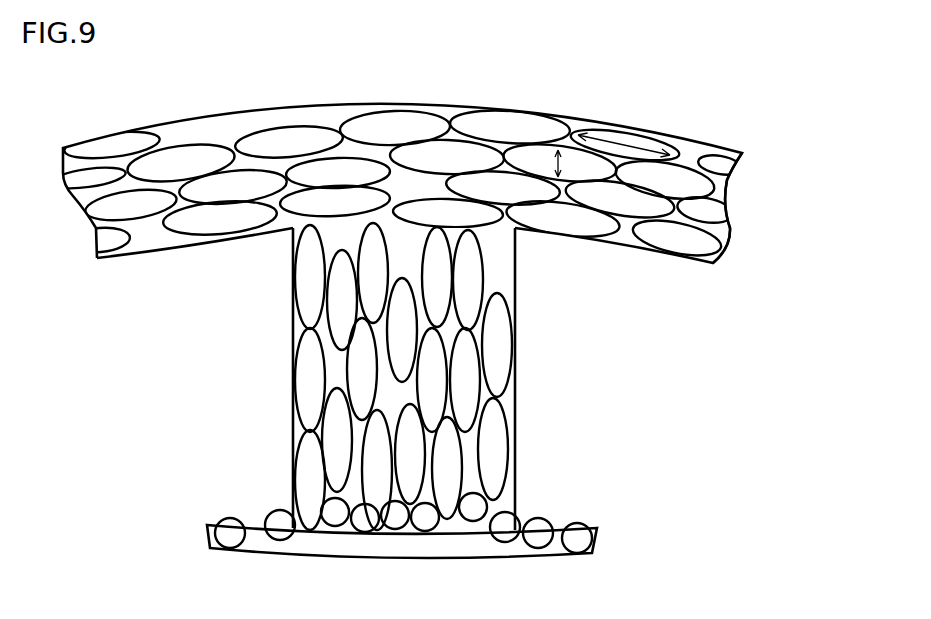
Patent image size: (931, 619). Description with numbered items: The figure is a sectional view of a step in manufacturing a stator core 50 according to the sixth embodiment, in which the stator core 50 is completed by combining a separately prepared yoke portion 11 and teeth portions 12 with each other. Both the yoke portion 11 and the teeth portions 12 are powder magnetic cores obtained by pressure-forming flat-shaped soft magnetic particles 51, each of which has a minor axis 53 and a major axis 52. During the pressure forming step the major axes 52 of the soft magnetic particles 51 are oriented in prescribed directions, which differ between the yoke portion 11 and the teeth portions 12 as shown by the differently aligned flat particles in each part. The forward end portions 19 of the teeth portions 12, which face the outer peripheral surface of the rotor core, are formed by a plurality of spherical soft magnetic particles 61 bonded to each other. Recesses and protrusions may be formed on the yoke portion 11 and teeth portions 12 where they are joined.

The yoke portion 11 is at (207, 118).
The teeth portions 12 is at (497, 265).
The forward end portions 19 is at (457, 525).
The stator core 50 is at (687, 104).
The soft magnetic particles 51 is at (397, 127).
The major axis 52 is at (608, 140).
The minor axis 53 is at (556, 165).
The spherical soft magnetic particles 61 is at (363, 530).